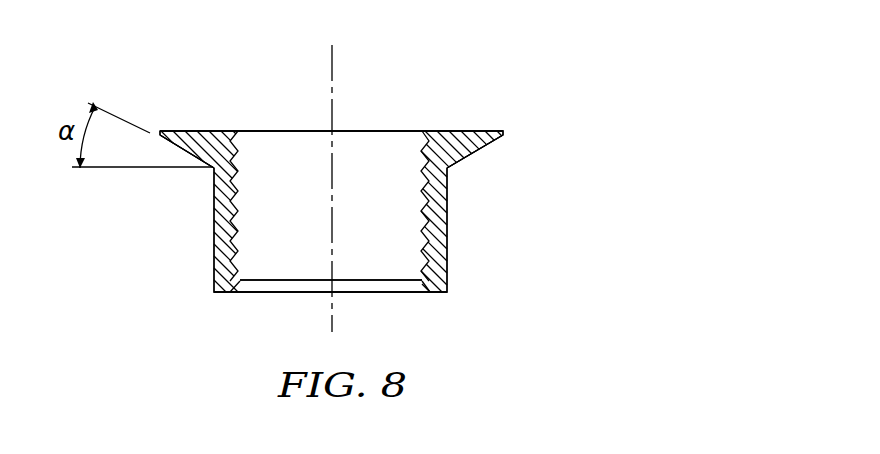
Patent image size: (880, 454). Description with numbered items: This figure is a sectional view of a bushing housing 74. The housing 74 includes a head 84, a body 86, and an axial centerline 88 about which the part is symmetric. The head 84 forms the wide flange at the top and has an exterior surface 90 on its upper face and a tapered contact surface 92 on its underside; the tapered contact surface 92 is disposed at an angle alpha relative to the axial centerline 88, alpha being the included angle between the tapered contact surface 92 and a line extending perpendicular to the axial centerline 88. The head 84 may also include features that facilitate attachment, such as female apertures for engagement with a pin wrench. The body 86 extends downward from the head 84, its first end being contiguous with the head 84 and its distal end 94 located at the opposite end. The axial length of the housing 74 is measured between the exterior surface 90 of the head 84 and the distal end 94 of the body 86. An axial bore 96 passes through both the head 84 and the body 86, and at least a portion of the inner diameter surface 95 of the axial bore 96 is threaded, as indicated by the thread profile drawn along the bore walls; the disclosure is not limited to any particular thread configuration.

The housing 74 is at (494, 110).
The head 84 is at (508, 154).
The body 86 is at (462, 242).
The axial centerline 88 is at (330, 58).
The exterior surface 90 is at (441, 131).
The tapered contact surface 92 is at (188, 152).
The distal end 94 is at (222, 294).
The inner diameter surface 95 is at (242, 168).
The axial bore 96 is at (316, 255).